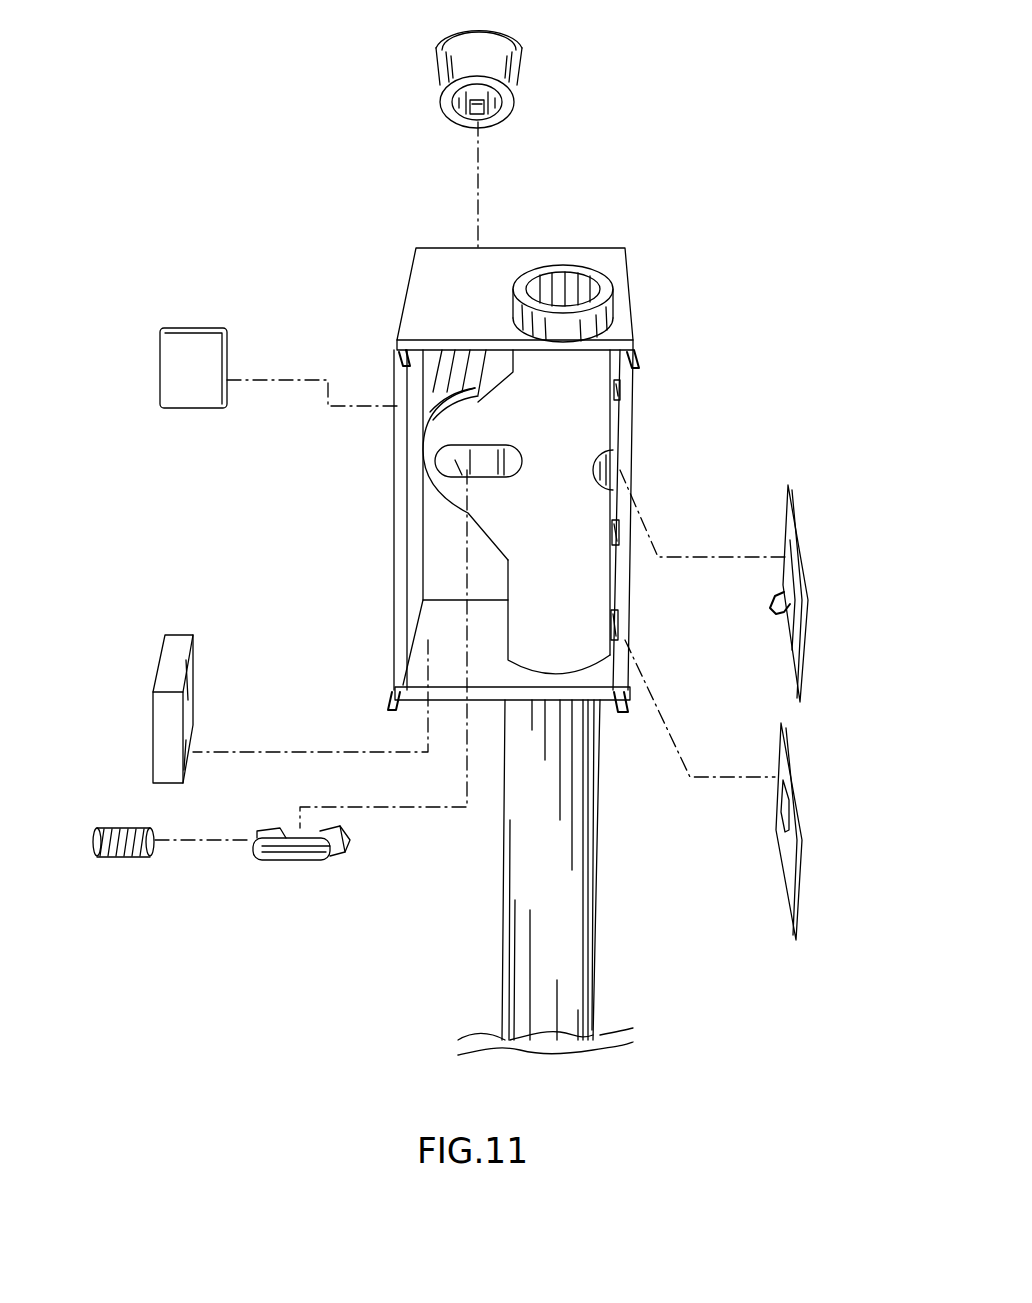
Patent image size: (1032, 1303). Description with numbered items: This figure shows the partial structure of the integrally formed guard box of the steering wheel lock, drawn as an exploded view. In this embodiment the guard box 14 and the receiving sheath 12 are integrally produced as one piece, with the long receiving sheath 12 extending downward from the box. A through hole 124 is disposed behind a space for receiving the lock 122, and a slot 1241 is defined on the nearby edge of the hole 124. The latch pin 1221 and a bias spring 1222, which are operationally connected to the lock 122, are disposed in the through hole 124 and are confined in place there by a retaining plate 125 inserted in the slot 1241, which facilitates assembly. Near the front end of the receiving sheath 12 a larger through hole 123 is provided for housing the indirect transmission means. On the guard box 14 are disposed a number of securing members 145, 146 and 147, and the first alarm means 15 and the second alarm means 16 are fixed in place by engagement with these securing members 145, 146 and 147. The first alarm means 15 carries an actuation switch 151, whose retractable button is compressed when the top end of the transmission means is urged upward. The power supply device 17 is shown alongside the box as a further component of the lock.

The receiving sheath 12 is at (567, 650).
The guard box 14 is at (616, 262).
The first alarm means 15 is at (838, 593).
The second alarm means 16 is at (803, 815).
The power supply device 17 is at (150, 745).
The lock 122 is at (515, 86).
The through hole 123 is at (618, 470).
The through hole 124 is at (440, 462).
The retaining plate 125 is at (172, 385).
The securing member 145 is at (630, 397).
The securing member 146 is at (620, 535).
The securing member 147 is at (623, 630).
The actuation switch 151 is at (792, 588).
The latch pin 1221 is at (298, 862).
The bias spring 1222 is at (125, 858).
The slot 1241 is at (425, 410).